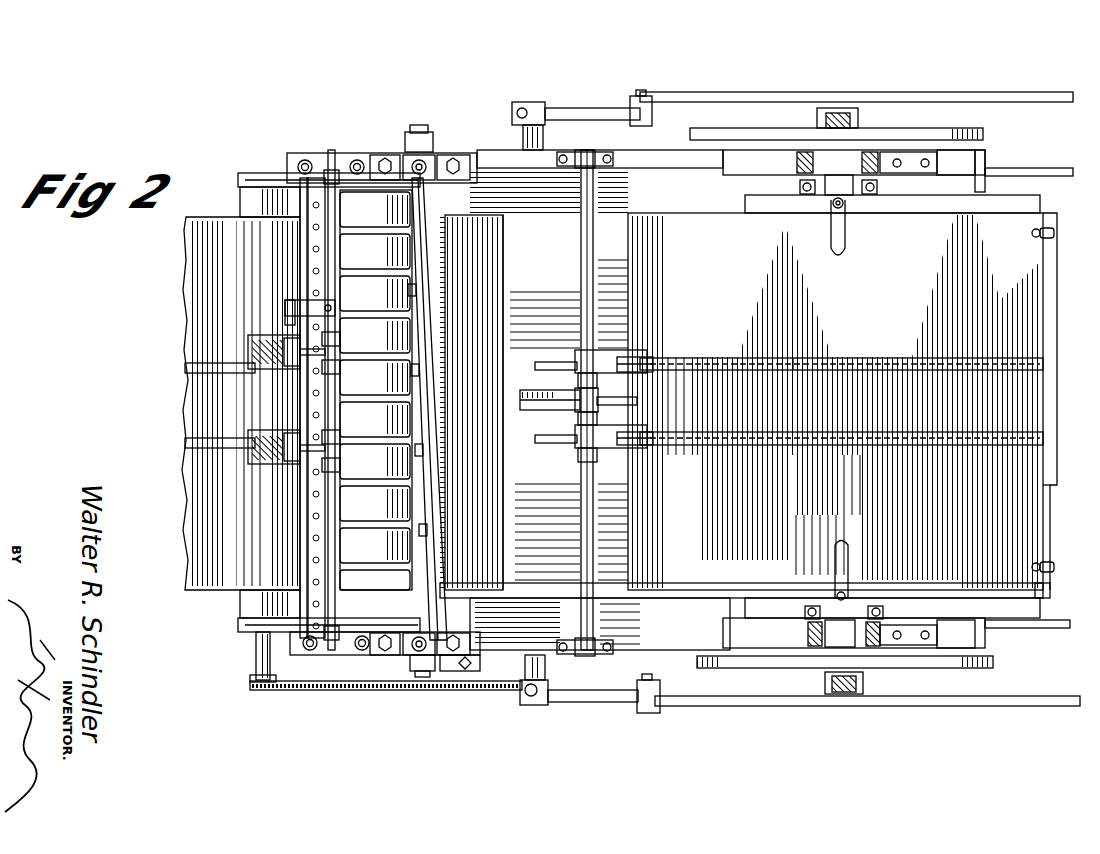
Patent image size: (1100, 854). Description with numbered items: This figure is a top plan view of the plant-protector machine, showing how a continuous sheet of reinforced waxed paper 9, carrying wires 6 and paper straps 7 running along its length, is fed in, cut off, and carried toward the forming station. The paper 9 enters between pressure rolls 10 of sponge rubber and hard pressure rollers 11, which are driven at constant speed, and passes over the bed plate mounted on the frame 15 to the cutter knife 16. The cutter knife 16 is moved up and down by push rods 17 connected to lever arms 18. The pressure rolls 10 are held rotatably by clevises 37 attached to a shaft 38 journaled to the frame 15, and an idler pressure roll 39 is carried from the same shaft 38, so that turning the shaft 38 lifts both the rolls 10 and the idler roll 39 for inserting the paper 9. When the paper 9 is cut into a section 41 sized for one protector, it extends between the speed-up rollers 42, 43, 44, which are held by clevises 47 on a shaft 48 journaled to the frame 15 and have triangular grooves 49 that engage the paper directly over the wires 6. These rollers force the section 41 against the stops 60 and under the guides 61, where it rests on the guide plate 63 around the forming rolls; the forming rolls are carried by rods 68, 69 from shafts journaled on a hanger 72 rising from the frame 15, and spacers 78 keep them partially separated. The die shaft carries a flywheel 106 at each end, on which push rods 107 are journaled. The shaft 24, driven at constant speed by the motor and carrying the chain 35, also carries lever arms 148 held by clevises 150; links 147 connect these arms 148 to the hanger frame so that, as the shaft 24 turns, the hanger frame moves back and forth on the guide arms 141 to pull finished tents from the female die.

The wires 6 is at (790, 364).
The paper straps 7 is at (190, 370).
The waxed paper 9 is at (200, 548).
The pressure rolls 10 is at (268, 370).
The pressure rollers 11 is at (250, 200).
The frame 15 is at (671, 640).
The cutter knife 16 is at (420, 270).
The push rods 17 is at (425, 134).
The lever arms 18 is at (463, 668).
The shaft 24 is at (540, 138).
The chain 35 is at (262, 340).
The clevises 37 is at (280, 468).
The shaft 38 is at (336, 325).
The idler pressure roll 39 is at (284, 308).
The section 41 is at (1040, 530).
The speed-up roller 42 is at (528, 390).
The speed-up roller 43 is at (648, 357).
The speed-up roller 44 is at (648, 446).
The clevises 47 is at (613, 448).
The shaft 48 is at (580, 512).
The triangular grooves 49 is at (650, 433).
The stops 60 is at (1054, 232).
The guides 61 is at (846, 237).
The guide plate 63 is at (1045, 591).
The rod 68 is at (803, 612).
The rod 69 is at (884, 612).
The hanger 72 is at (805, 650).
The spacers 78 is at (840, 188).
The flywheel 106 is at (985, 134).
The push rods 107 is at (836, 112).
The guide arms 141 is at (1020, 174).
The links 147 is at (890, 78).
The lever arms 148 is at (593, 108).
The clevises 150 is at (522, 700).